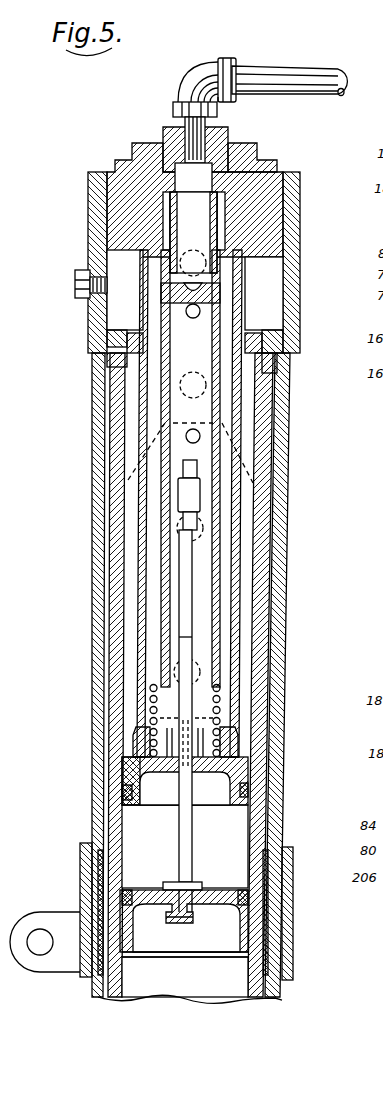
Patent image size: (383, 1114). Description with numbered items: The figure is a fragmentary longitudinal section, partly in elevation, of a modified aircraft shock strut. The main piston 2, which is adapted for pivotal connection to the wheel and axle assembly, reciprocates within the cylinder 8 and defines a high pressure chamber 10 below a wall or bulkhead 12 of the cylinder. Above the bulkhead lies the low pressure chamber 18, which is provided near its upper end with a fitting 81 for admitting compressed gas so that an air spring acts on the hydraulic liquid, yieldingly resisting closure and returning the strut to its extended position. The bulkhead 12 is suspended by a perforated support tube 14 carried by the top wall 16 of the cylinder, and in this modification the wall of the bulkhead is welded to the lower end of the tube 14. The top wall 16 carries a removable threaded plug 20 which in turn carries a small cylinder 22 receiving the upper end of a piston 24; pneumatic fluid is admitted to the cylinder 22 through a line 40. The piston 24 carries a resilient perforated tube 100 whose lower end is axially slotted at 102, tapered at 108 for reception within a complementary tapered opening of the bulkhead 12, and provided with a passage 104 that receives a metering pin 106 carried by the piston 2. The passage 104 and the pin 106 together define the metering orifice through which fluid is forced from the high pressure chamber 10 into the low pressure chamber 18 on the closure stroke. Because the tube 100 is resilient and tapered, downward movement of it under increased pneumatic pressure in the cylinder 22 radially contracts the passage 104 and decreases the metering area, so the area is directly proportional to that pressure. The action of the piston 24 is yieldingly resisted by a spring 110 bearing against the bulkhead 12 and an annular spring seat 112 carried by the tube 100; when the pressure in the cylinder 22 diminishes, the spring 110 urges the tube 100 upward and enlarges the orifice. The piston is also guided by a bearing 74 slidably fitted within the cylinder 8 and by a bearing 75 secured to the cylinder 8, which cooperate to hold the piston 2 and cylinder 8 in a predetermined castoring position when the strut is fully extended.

The line 40 is at (293, 75).
The top wall 16 is at (110, 172).
The threaded plug 20 is at (230, 140).
The cylinder 22 is at (262, 160).
The piston 24 is at (200, 232).
The perforated tube 100 is at (220, 318).
The fitting 81 is at (78, 272).
The low pressure chamber 18 is at (125, 310).
The bearing 74 is at (277, 370).
The cylinder 8 is at (287, 468).
The perforated tube 14 is at (237, 627).
The annular spring seat 112 is at (221, 687).
The spring 110 is at (221, 707).
The axial slot 102 is at (240, 740).
The tapered lower end 108 is at (122, 766).
The bulkhead 12 is at (240, 772).
The passage 104 is at (177, 768).
The metering pin 106 is at (186, 843).
The high pressure chamber 10 is at (135, 868).
The bearing 75 is at (268, 920).
The piston 2 is at (222, 905).